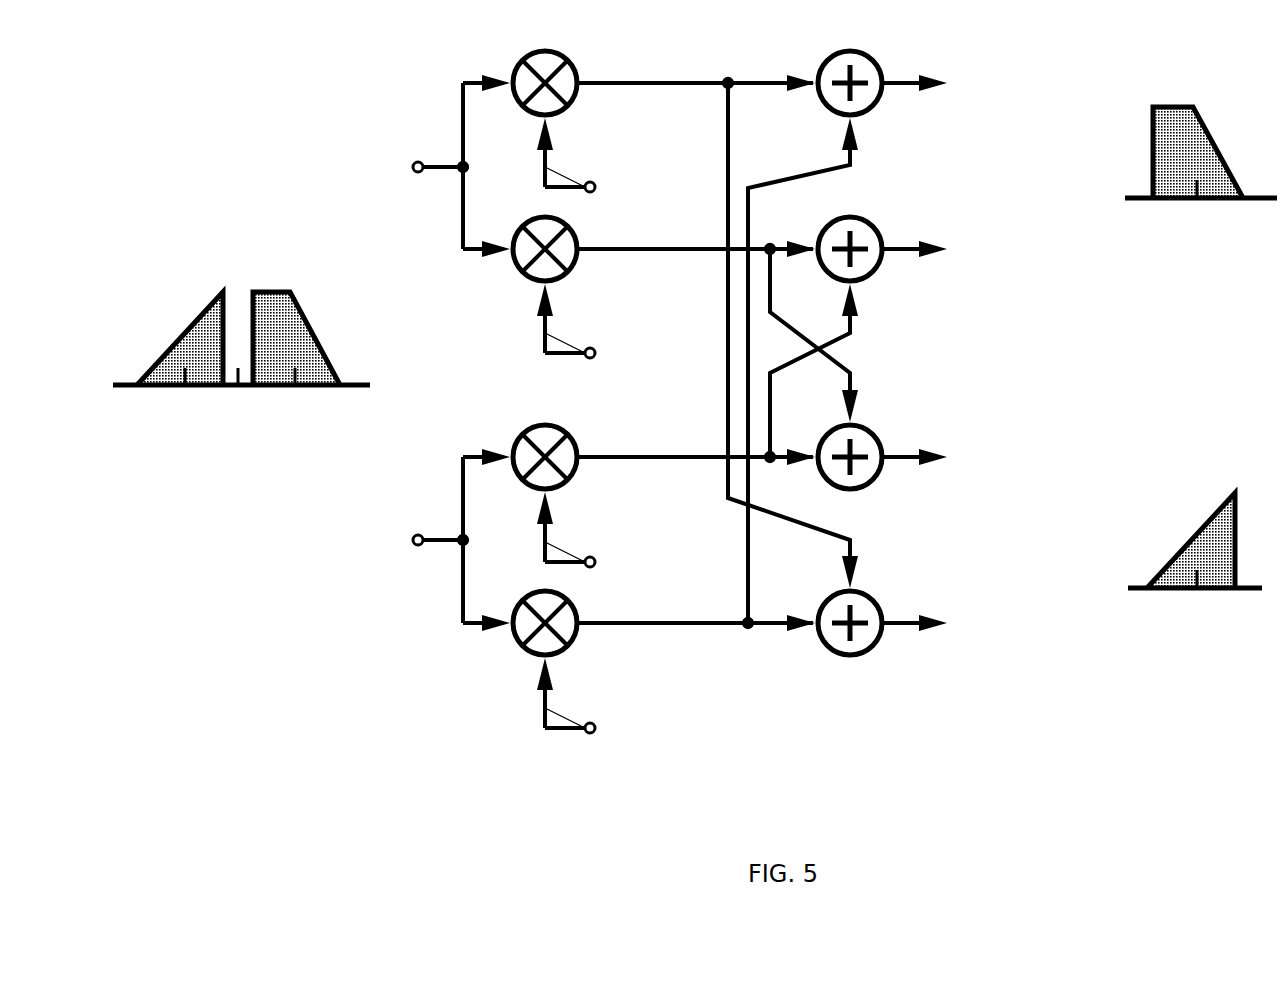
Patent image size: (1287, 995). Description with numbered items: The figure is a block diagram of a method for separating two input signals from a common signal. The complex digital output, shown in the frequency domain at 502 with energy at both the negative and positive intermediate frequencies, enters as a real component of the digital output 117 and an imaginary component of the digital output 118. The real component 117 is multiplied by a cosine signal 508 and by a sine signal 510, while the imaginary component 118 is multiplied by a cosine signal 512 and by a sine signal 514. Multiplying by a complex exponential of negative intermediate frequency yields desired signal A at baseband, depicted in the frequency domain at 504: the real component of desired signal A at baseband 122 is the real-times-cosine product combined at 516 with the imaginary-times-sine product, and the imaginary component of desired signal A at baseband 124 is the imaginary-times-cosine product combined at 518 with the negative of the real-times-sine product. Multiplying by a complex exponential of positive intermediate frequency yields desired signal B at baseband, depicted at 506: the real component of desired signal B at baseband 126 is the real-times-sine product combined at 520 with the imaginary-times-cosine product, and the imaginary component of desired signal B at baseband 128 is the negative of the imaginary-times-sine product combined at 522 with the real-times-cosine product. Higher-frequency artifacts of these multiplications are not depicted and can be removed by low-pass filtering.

The real component of the digital output 117 is at (416, 166).
The imaginary component of the digital output 118 is at (411, 540).
The real component of desired signal A at baseband 122 is at (994, 102).
The imaginary component of desired signal A at baseband 124 is at (1000, 272).
The real component of desired signal B at baseband 126 is at (1000, 467).
The imaginary component of desired signal B at baseband 128 is at (995, 636).
The digital output in the frequency domain 502 is at (241, 375).
The desired signal A at baseband 504 is at (1201, 185).
The desired signal B at baseband 506 is at (1195, 574).
The cosine signal multiplier 508 is at (663, 103).
The sine signal multiplier 510 is at (663, 302).
The cosine signal multiplier 512 is at (650, 485).
The sine signal multiplier 514 is at (663, 679).
The combiner 516 is at (834, 80).
The combiner 518 is at (834, 251).
The combiner 520 is at (842, 445).
The combiner 522 is at (848, 606).